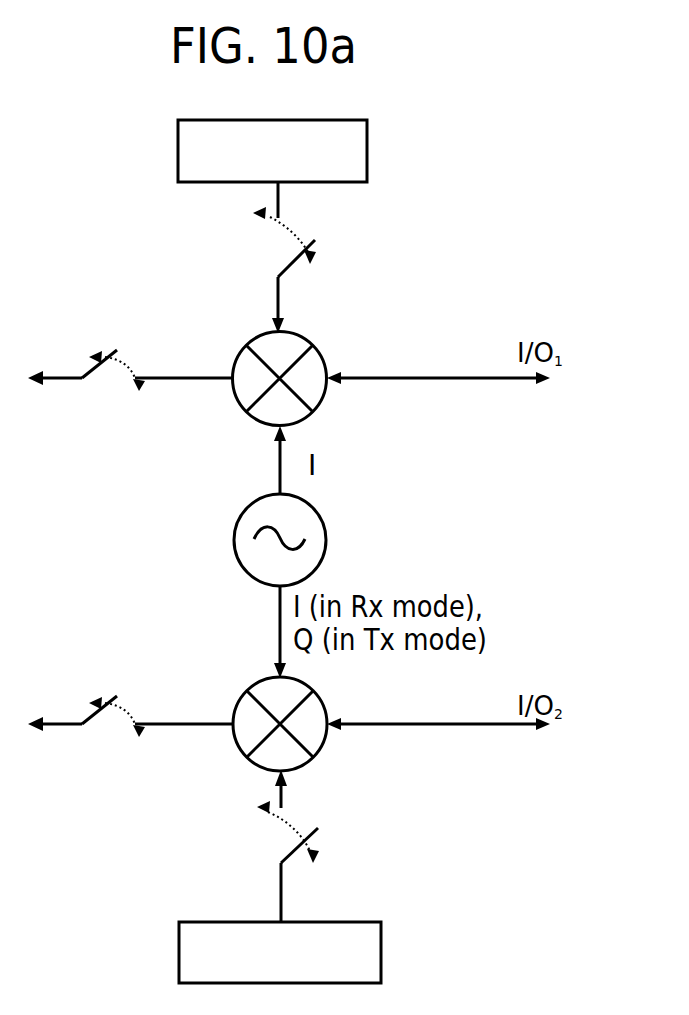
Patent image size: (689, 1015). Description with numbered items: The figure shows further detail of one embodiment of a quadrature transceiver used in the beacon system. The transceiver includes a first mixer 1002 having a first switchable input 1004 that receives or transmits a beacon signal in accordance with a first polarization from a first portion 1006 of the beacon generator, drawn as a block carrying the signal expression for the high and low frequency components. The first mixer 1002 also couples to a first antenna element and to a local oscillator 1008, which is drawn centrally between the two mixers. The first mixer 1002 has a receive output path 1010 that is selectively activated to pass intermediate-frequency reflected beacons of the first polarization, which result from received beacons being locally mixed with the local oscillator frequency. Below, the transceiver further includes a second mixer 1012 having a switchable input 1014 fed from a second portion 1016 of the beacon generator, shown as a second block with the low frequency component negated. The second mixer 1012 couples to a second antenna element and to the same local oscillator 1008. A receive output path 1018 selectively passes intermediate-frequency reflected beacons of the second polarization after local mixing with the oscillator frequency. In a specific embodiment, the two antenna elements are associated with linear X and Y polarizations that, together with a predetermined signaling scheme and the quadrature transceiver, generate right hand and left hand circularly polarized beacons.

The first mixer 1002 is at (323, 358).
The first switchable input 1004 is at (315, 243).
The first portion of the beacon generator 1006 is at (367, 150).
The local oscillator 1008 is at (233, 535).
The receive output path 1010 is at (203, 378).
The second mixer 1012 is at (322, 741).
The switchable input 1014 is at (318, 831).
The second portion of the beacon generator 1016 is at (179, 950).
The receive output path 1018 is at (193, 724).